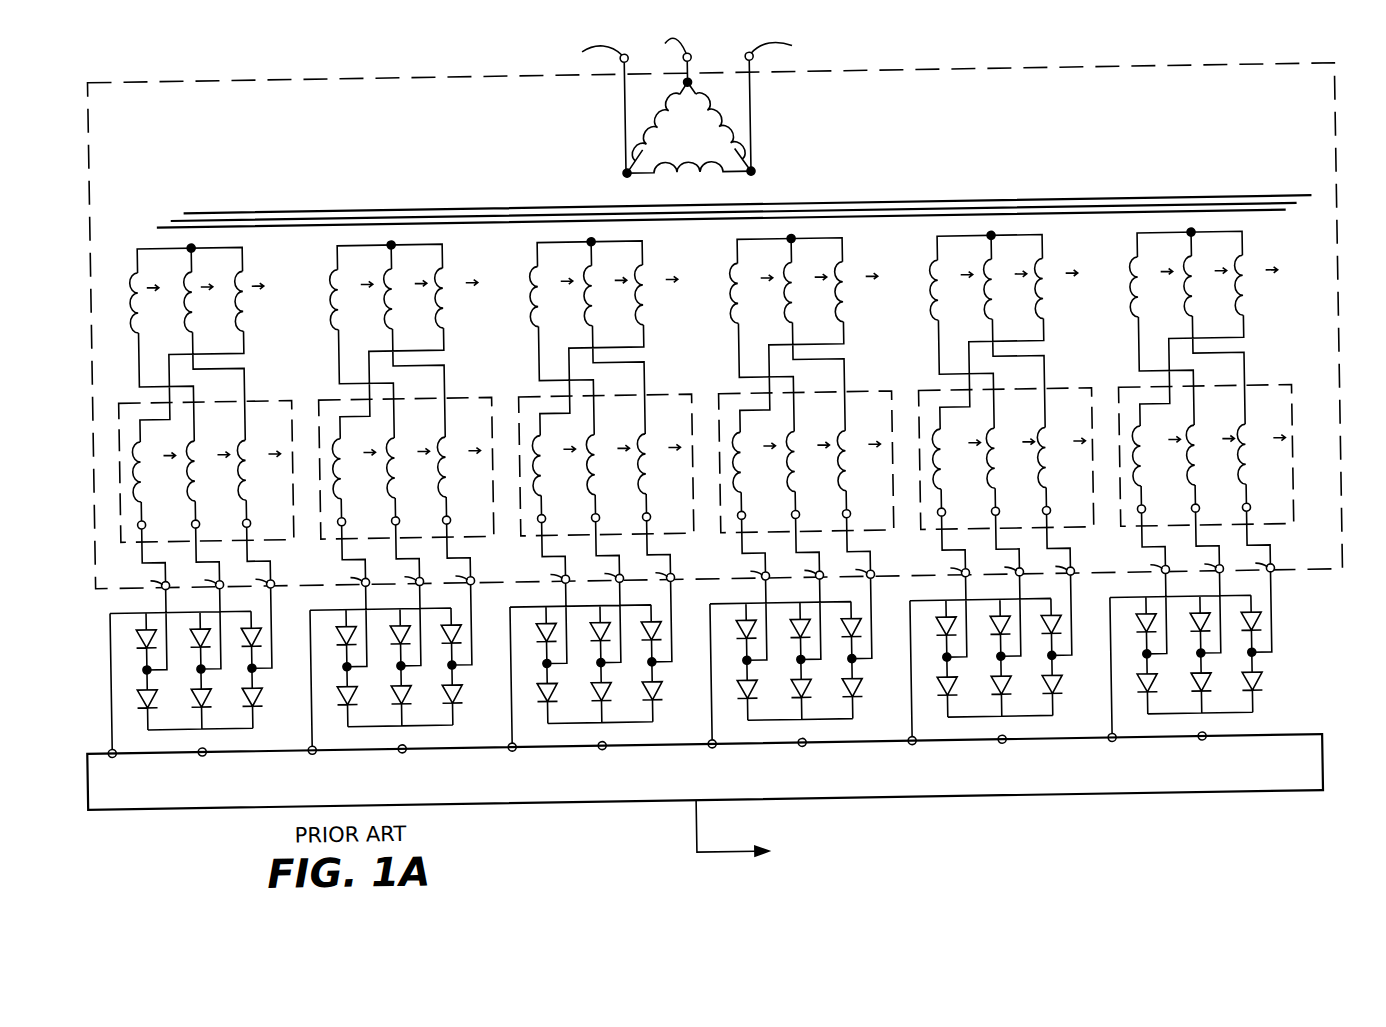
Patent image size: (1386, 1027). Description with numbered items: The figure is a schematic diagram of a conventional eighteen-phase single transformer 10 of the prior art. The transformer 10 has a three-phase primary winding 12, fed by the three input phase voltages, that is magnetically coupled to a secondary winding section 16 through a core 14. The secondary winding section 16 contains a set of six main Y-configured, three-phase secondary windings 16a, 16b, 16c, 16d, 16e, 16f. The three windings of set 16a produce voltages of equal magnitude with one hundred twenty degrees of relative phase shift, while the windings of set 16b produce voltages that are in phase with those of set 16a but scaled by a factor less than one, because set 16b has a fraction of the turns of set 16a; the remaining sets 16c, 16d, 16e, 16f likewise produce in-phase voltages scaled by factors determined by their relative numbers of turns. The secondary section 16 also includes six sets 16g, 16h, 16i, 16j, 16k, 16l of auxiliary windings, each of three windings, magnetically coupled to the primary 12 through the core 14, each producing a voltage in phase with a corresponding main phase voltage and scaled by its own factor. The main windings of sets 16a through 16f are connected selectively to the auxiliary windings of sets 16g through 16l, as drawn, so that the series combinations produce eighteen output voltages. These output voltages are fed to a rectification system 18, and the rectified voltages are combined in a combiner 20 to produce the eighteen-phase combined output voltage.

The transformer 10 is at (1341, 155).
The three-phase primary winding 12 is at (704, 158).
The core 14 is at (1056, 204).
The secondary winding section 16 is at (121, 368).
The first main secondary winding set 16a is at (147, 236).
The second main secondary winding set 16b is at (347, 236).
The third main secondary winding set 16c is at (547, 236).
The fourth main secondary winding set 16d is at (812, 236).
The fifth main secondary winding set 16e is at (947, 236).
The sixth main secondary winding set 16f is at (1147, 236).
The first auxiliary winding set 16g is at (257, 401).
The second auxiliary winding set 16h is at (333, 400).
The third auxiliary winding set 16i is at (526, 399).
The fourth auxiliary winding set 16j is at (726, 399).
The fifth auxiliary winding set 16k is at (926, 399).
The sixth auxiliary winding set 16l is at (1126, 399).
The rectification system 18 is at (88, 676).
The combiner 20 is at (1316, 763).